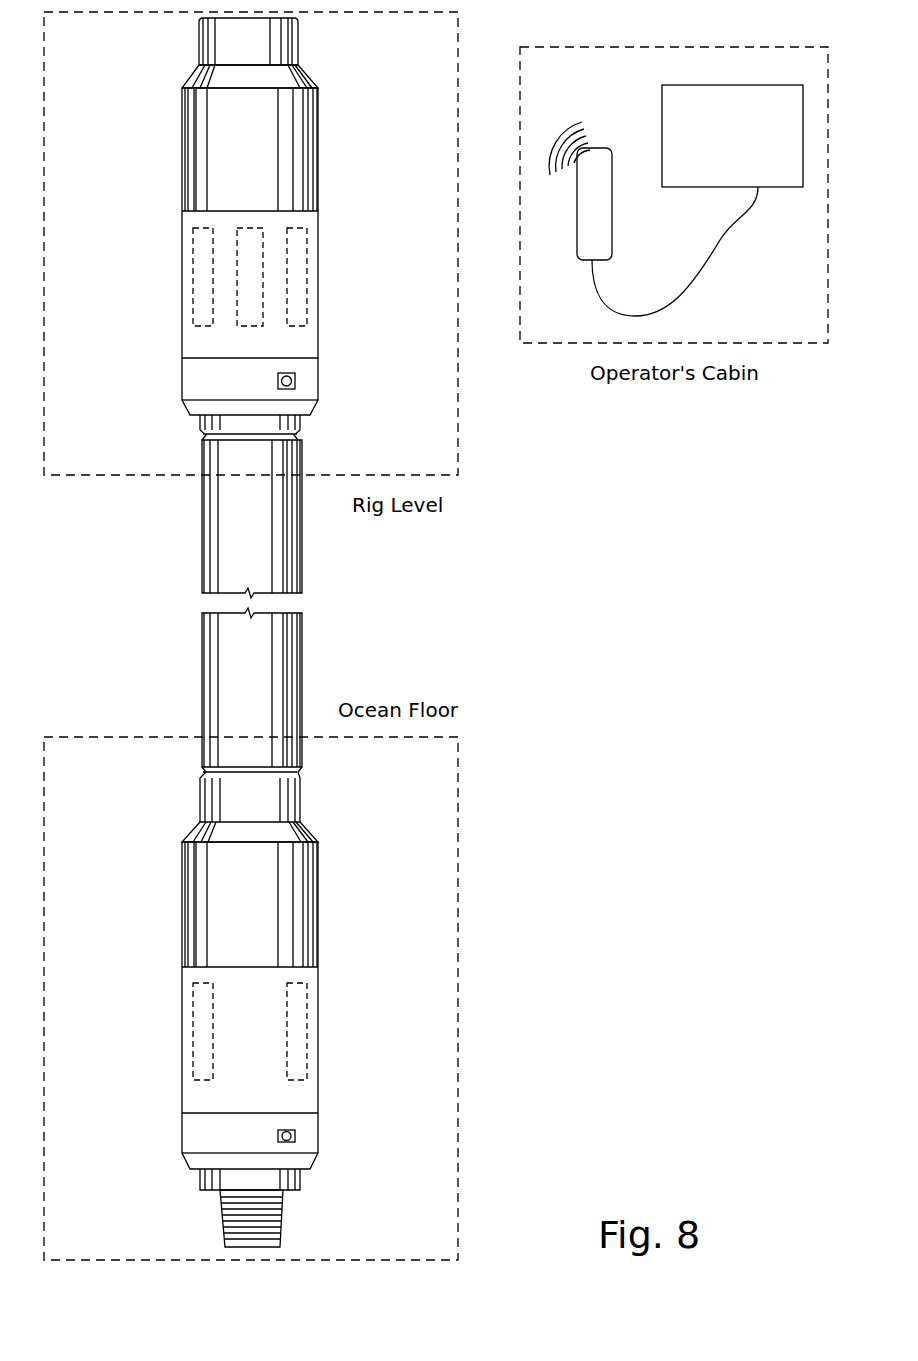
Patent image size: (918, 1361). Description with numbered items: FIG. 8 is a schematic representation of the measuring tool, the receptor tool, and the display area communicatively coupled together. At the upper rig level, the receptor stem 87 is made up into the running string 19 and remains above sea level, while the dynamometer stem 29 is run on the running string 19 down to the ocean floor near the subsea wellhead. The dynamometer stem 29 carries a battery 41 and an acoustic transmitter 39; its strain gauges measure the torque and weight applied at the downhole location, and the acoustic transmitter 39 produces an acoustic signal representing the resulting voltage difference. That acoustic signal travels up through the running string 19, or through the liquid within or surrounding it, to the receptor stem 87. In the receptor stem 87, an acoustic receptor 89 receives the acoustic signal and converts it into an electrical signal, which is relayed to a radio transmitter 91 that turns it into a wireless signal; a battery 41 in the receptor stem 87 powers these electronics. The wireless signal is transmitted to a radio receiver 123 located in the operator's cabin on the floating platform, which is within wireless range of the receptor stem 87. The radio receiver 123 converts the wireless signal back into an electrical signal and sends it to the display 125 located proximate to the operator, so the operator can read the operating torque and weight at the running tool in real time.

The receptor stem 87 is at (318, 143).
The radio transmitter 91 is at (203, 260).
The acoustic receptor 89 is at (250, 294).
The battery 41 is at (297, 270).
The running string 19 is at (202, 541).
The dynamometer stem 29 is at (318, 893).
The acoustic transmitter 39 is at (300, 1014).
The display 125 is at (662, 100).
The radio receiver 123 is at (612, 240).